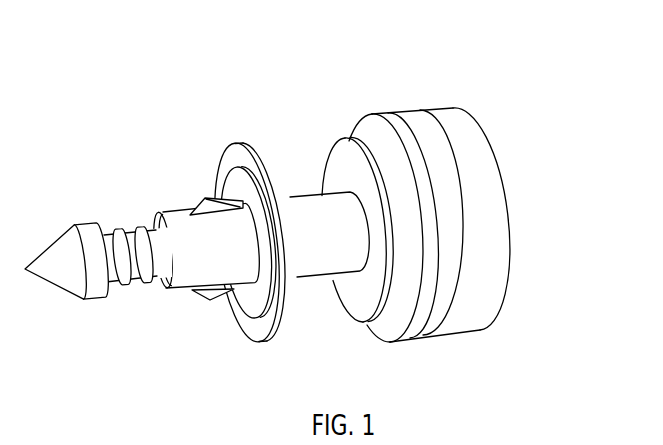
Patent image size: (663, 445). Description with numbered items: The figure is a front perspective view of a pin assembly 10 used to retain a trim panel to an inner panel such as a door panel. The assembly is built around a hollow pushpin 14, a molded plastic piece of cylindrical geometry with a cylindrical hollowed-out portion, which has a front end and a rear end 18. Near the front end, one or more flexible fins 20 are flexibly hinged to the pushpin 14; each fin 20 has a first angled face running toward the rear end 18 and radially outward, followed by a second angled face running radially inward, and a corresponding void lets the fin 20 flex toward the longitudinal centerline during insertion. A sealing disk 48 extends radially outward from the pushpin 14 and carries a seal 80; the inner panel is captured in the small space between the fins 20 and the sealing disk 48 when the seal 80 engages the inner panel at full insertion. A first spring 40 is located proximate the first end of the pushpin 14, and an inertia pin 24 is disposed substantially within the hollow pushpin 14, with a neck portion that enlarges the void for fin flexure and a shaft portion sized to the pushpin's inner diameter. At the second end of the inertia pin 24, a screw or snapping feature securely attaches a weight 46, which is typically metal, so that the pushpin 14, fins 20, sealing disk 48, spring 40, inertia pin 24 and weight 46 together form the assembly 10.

The pin assembly 10 is at (284, 201).
The hollow pushpin 14 is at (225, 258).
The rear end 18 is at (407, 130).
The flexible fin 20 is at (190, 198).
The inertia pin 24 is at (145, 227).
The first spring 40 is at (132, 291).
The weight 46 is at (493, 297).
The sealing disk 48 is at (263, 154).
The seal 80 is at (235, 181).